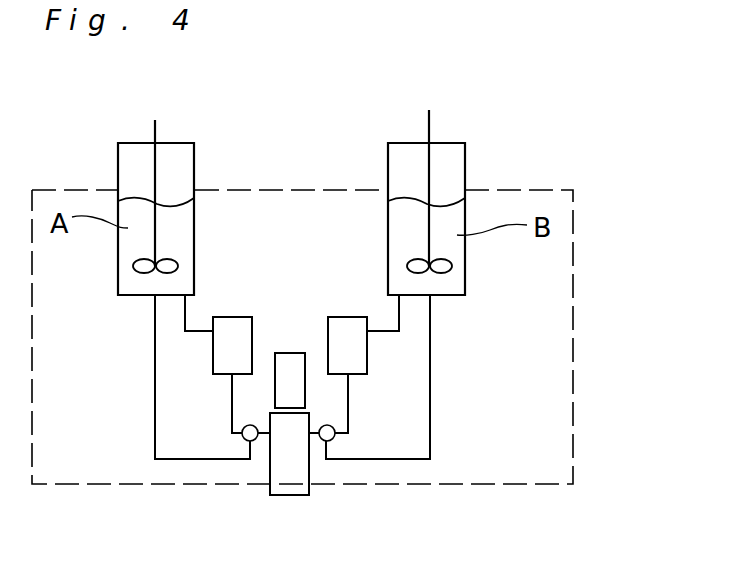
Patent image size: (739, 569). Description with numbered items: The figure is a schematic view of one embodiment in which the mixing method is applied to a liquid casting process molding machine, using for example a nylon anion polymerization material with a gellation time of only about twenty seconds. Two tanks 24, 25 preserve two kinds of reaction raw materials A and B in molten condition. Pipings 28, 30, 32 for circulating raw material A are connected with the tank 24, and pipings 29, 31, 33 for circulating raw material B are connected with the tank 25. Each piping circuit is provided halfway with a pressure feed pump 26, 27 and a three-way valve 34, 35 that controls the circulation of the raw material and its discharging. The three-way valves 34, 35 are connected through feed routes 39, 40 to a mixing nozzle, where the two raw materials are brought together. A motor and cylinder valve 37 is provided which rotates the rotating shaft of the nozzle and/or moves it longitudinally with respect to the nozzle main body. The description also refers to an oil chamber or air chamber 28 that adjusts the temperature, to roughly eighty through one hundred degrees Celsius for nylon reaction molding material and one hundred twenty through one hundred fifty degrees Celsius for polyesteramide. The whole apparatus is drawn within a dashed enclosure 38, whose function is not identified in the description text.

The tank 24 is at (188, 153).
The tank 25 is at (457, 152).
The pressure feed pump 26 is at (229, 327).
The pressure feed pump 27 is at (350, 327).
The piping 28 is at (155, 409).
The piping 29 is at (430, 405).
The piping 30 is at (232, 391).
The piping 31 is at (348, 390).
The piping 32 is at (183, 320).
The piping 33 is at (400, 317).
The three-way valve 34 is at (242, 436).
The three-way valve 35 is at (330, 438).
The motor and cylinder valve 37 is at (288, 360).
The dosing unit enclosure 38 is at (575, 450).
The feed route 39 is at (263, 435).
The feed route 40 is at (312, 435).